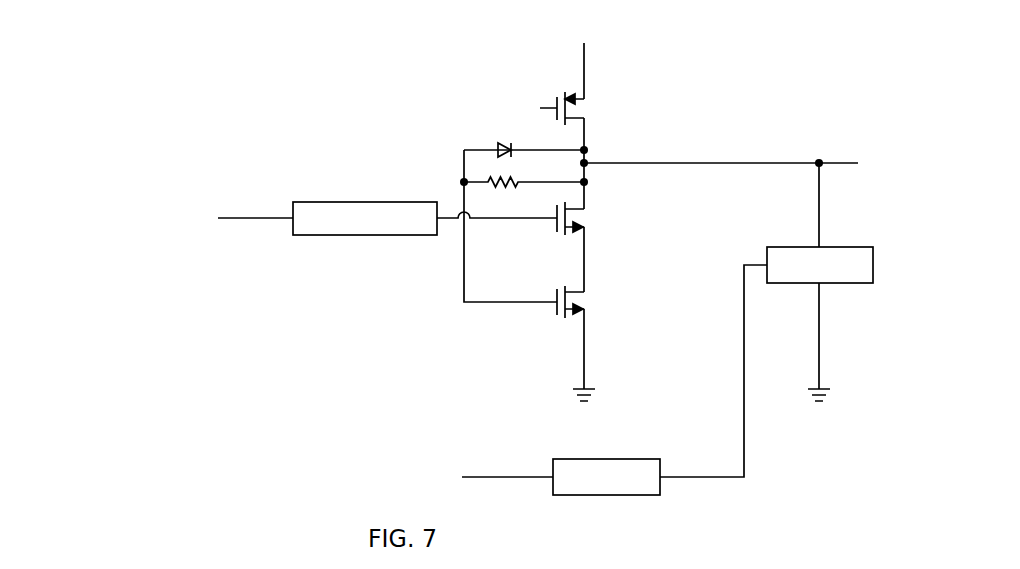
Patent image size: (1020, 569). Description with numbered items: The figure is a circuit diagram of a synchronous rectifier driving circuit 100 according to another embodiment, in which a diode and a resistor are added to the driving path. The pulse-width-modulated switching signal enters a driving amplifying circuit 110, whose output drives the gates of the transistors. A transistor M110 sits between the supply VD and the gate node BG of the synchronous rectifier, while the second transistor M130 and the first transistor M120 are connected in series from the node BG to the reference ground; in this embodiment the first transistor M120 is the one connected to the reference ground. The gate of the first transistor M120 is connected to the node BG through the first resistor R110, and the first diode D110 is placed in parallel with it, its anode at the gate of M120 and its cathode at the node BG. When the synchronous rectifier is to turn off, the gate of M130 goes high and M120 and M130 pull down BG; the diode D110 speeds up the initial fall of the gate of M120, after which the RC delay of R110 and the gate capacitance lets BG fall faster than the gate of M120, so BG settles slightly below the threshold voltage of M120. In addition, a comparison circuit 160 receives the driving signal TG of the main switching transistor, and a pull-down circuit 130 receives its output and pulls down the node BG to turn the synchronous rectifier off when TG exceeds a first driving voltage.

The synchronous rectifier driving circuit 100 is at (235, 71).
The driving amplifying circuit 110 is at (365, 219).
The pull-down circuit 130 is at (820, 282).
The comparison circuit 160 is at (606, 477).
The transistor M110 is at (592, 108).
The first transistor M120 is at (597, 302).
The second transistor M130 is at (600, 218).
The first diode D110 is at (524, 139).
The first resistor R110 is at (524, 193).